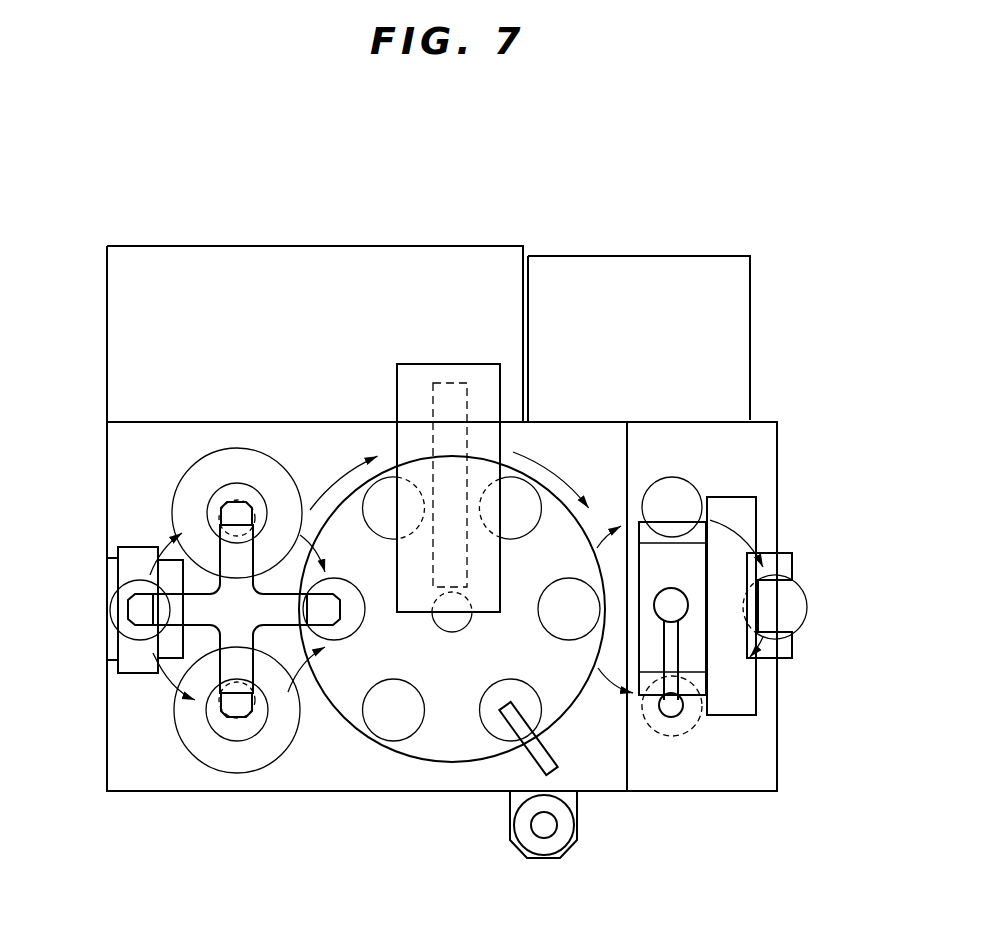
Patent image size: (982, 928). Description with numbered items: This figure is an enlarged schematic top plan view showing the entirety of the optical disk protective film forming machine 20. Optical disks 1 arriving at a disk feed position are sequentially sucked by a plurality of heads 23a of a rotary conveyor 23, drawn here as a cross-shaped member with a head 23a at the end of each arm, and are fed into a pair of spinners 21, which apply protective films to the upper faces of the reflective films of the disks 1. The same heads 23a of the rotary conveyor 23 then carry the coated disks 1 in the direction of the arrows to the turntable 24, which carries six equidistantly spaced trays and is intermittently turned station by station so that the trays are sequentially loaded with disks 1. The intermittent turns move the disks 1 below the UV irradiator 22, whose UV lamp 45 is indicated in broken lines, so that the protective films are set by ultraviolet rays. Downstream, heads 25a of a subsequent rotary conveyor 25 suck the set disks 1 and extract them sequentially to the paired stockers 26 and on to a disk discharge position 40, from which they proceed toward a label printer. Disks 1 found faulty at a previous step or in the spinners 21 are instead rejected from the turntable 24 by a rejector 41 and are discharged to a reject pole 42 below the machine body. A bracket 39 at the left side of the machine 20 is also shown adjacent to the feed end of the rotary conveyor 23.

The optical disk 1 is at (247, 465).
The protective film forming machine 20 is at (600, 240).
The spinner 21 is at (202, 472).
The UV irradiator 22 is at (487, 378).
The rotary conveyor 23 is at (228, 617).
The head 23a is at (232, 513).
The turntable 24 is at (312, 512).
The rotary conveyor 25 is at (722, 687).
The head 25a is at (683, 715).
The stocker 26 is at (672, 478).
The left bracket 39 is at (106, 612).
The disk discharge position 40 is at (812, 604).
The rejector 41 is at (545, 745).
The reject pole 42 is at (515, 825).
The UV lamp 45 is at (437, 383).